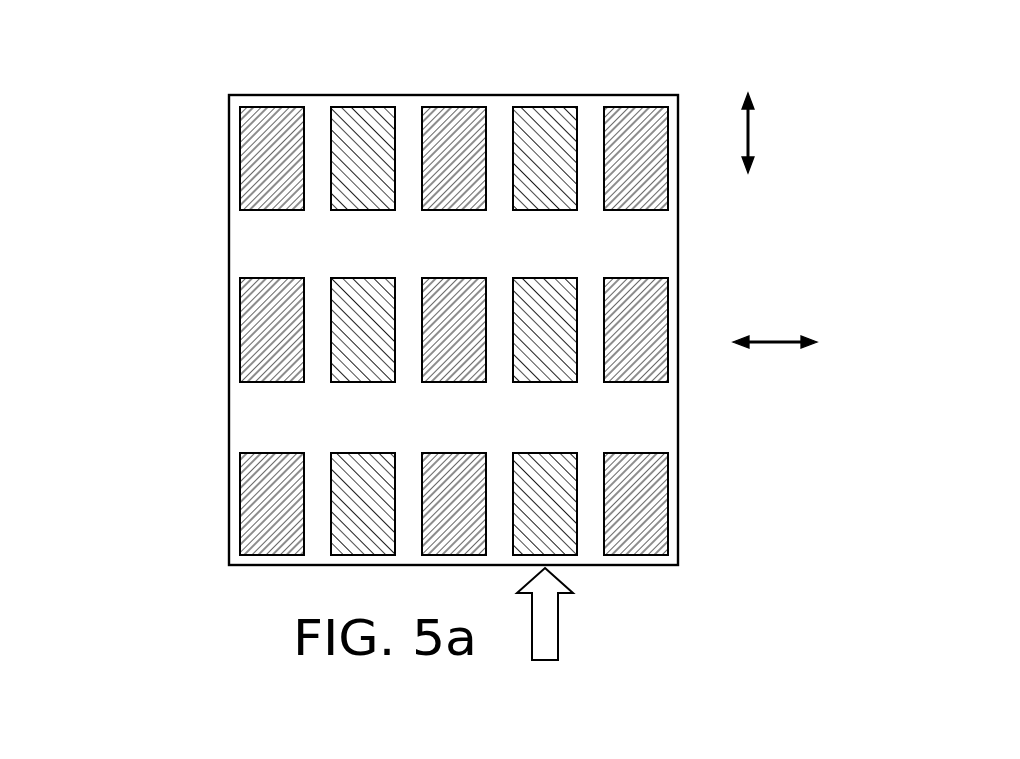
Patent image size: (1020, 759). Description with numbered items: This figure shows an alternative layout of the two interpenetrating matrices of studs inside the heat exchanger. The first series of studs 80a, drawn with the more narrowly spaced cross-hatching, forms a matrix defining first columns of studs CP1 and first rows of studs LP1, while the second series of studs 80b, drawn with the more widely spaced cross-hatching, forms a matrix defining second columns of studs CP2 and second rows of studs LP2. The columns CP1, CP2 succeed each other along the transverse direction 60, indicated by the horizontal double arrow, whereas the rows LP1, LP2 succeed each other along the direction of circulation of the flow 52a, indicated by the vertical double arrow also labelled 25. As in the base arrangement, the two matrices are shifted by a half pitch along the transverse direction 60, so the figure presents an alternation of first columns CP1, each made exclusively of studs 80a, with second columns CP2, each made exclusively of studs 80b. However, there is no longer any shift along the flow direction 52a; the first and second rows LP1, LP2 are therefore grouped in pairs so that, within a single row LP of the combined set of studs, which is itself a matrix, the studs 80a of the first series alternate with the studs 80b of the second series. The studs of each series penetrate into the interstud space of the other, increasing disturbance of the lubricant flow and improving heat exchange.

The first columns of studs CP1 is at (506, 283).
The second columns of studs CP2 is at (546, 283).
The row of the set of studs LP is at (102, 123).
The first rows of studs LP1 is at (226, 127).
The second rows of studs LP2 is at (226, 172).
The first series of studs 80a is at (643, 165).
The second series of studs 80b is at (548, 470).
The transverse direction 60 is at (779, 338).
The direction of circulation of the flow 52a is at (812, 133).
The conveying direction 25 is at (752, 131).